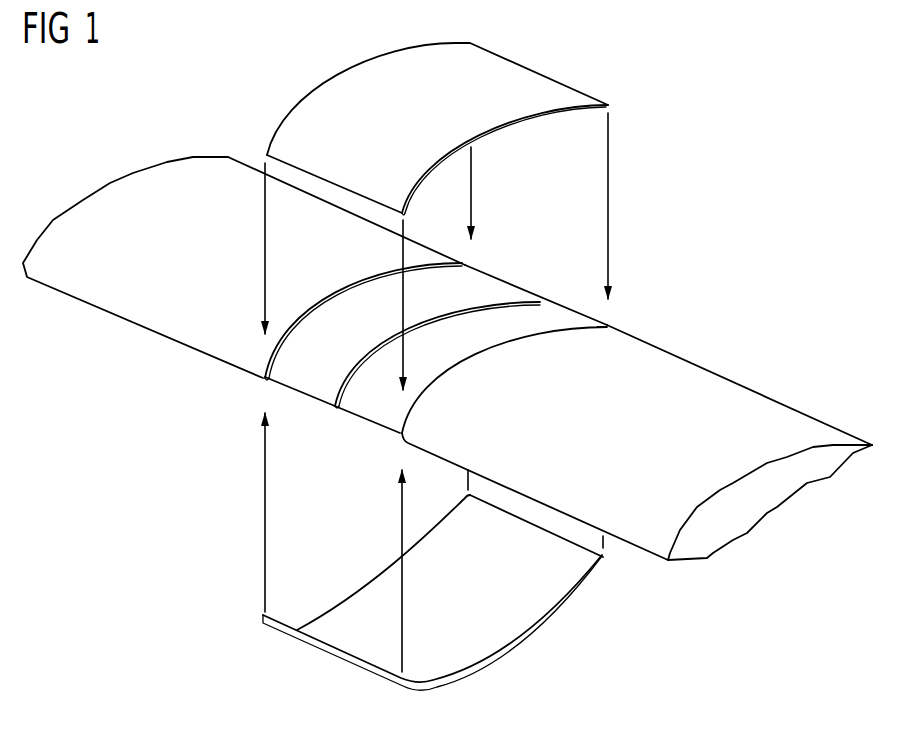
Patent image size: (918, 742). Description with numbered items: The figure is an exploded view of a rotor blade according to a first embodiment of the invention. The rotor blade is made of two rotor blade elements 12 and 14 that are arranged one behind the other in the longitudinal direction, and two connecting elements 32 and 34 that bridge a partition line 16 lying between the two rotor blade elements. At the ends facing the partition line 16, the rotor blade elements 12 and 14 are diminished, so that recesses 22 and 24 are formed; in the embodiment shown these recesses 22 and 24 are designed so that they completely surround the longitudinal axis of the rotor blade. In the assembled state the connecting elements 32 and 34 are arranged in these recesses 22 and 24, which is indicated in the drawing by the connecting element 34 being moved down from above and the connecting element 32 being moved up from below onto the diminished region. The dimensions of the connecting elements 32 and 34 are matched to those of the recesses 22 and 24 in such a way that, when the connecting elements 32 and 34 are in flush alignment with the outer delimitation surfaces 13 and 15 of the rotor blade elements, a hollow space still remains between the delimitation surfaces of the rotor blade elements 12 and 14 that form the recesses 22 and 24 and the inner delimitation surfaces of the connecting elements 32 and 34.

The rotor blade element 12 is at (783, 381).
The outer delimitation surface 13 is at (650, 368).
The rotor blade element 14 is at (72, 178).
The outer delimitation surface 15 is at (208, 165).
The partition line 16 is at (368, 358).
The recess 22 is at (542, 313).
The recess 24 is at (478, 286).
The connecting element 32 is at (373, 603).
The connecting element 34 is at (510, 84).